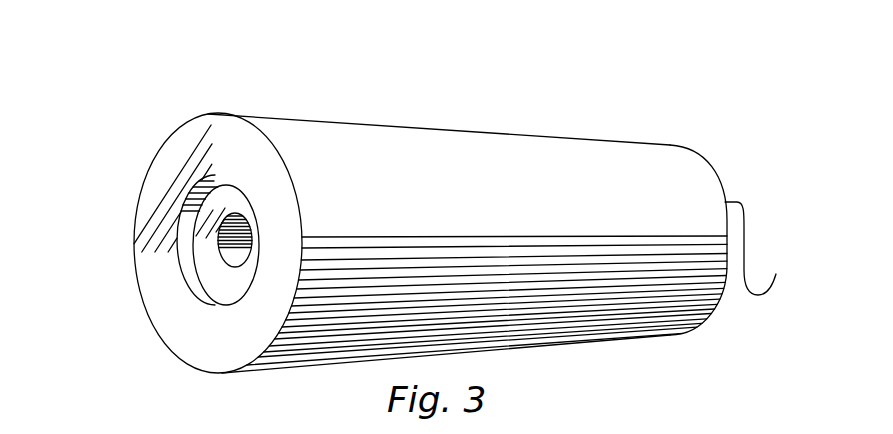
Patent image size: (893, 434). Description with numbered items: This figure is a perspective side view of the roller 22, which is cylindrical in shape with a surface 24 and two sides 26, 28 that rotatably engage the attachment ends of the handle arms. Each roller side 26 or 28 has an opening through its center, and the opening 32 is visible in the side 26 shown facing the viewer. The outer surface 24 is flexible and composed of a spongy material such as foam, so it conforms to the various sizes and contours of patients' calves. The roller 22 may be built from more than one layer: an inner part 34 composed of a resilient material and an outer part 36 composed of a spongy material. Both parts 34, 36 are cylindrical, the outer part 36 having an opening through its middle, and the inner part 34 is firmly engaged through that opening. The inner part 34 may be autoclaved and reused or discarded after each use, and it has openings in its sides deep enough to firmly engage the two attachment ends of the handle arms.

The roller 22 is at (152, 167).
The surface 24 is at (520, 160).
The side 26 is at (212, 287).
The side 28 is at (761, 248).
The opening 32 is at (222, 240).
The inner part 34 is at (230, 190).
The outer part 36 is at (263, 160).